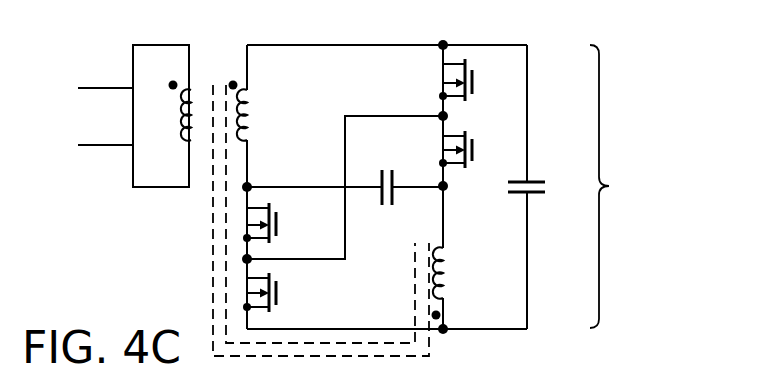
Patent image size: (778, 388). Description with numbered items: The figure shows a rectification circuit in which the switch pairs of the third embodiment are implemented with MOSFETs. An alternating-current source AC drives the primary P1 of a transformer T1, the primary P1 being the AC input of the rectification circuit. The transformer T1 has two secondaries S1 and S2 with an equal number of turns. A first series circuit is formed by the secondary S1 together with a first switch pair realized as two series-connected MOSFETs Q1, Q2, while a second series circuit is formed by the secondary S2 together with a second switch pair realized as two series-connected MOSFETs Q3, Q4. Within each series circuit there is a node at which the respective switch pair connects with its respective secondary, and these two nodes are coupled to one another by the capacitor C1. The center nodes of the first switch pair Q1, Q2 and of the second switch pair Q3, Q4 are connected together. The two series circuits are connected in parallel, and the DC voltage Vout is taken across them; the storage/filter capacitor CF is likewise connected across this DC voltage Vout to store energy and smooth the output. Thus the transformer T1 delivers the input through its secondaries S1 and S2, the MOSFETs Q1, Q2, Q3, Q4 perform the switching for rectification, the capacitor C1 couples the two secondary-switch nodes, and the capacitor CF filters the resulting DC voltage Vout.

The AC input AC is at (133, 116).
The transformer T1 is at (317, 188).
The primary P1 is at (173, 111).
The secondary S1 is at (259, 111).
The secondary S2 is at (461, 283).
The MOSFET Q1 is at (280, 293).
The MOSFET Q2 is at (280, 223).
The MOSFET Q3 is at (476, 149).
The MOSFET Q4 is at (476, 80).
The capacitor C1 is at (393, 171).
The storage/filter capacitor CF is at (543, 190).
The DC voltage Vout is at (661, 186).